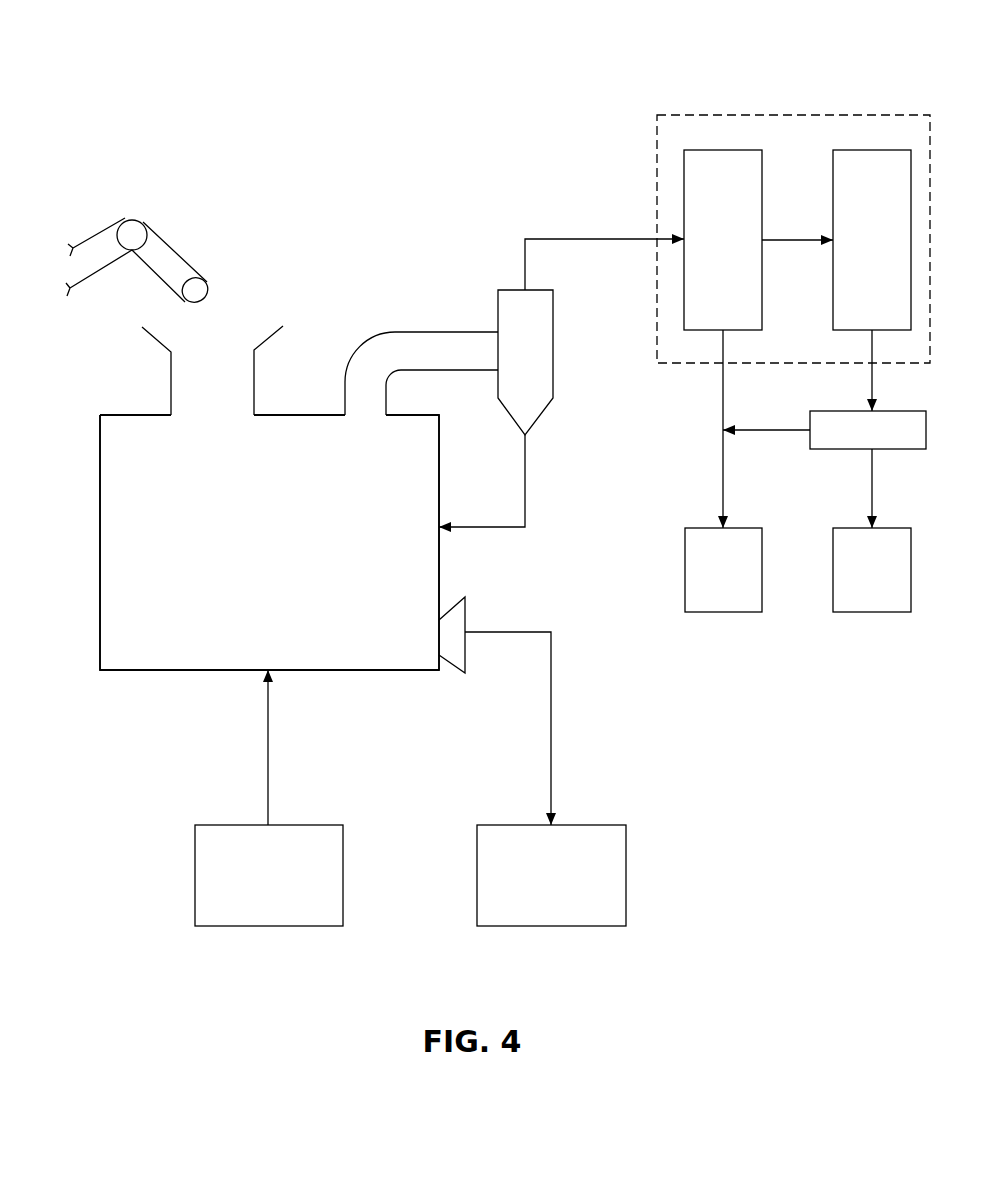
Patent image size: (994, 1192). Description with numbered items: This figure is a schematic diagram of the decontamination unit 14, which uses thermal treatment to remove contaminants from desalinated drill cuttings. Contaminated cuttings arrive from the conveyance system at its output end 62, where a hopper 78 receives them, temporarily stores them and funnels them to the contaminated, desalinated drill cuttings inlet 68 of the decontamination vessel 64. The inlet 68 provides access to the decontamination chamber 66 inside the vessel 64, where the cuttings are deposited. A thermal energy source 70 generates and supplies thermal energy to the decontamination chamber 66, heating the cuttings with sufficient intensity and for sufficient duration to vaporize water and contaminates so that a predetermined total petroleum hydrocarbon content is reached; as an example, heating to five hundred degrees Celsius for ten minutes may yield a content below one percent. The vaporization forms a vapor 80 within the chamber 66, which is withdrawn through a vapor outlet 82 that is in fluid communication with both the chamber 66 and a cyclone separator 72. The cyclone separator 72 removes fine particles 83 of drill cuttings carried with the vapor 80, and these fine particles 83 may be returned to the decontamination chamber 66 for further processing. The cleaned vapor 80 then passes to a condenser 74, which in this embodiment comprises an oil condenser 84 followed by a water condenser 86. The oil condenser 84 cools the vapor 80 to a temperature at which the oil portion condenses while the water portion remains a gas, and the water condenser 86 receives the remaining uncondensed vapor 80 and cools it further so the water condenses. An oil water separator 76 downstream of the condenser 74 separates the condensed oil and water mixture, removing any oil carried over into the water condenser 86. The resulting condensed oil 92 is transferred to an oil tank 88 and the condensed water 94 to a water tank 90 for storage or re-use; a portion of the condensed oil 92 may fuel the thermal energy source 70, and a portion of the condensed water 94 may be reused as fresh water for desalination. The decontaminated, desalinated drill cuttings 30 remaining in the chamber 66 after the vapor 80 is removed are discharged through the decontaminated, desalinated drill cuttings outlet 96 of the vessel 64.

The decontamination unit 14 is at (886, 39).
The decontaminated, desalinated drill cuttings 30 is at (510, 825).
The output end 62 is at (178, 247).
The decontamination vessel 64 is at (100, 645).
The decontamination chamber 66 is at (113, 568).
The contaminated, desalinated drill cuttings inlet 68 is at (203, 412).
The thermal energy source 70 is at (237, 825).
The cyclone separator 72 is at (498, 305).
The condenser 74 is at (675, 115).
The oil water separator 76 is at (850, 411).
The hopper 78 is at (156, 338).
The vapor 80 is at (589, 238).
The vapor outlet 82 is at (372, 415).
The fine particles 83 is at (497, 527).
The oil condenser 84 is at (735, 150).
The water condenser 86 is at (878, 150).
The oil tank 88 is at (722, 612).
The water tank 90 is at (860, 612).
The condensed oil 92 is at (720, 445).
The condensed water 94 is at (875, 505).
The decontaminated, desalinated drill cuttings outlet 96 is at (468, 610).